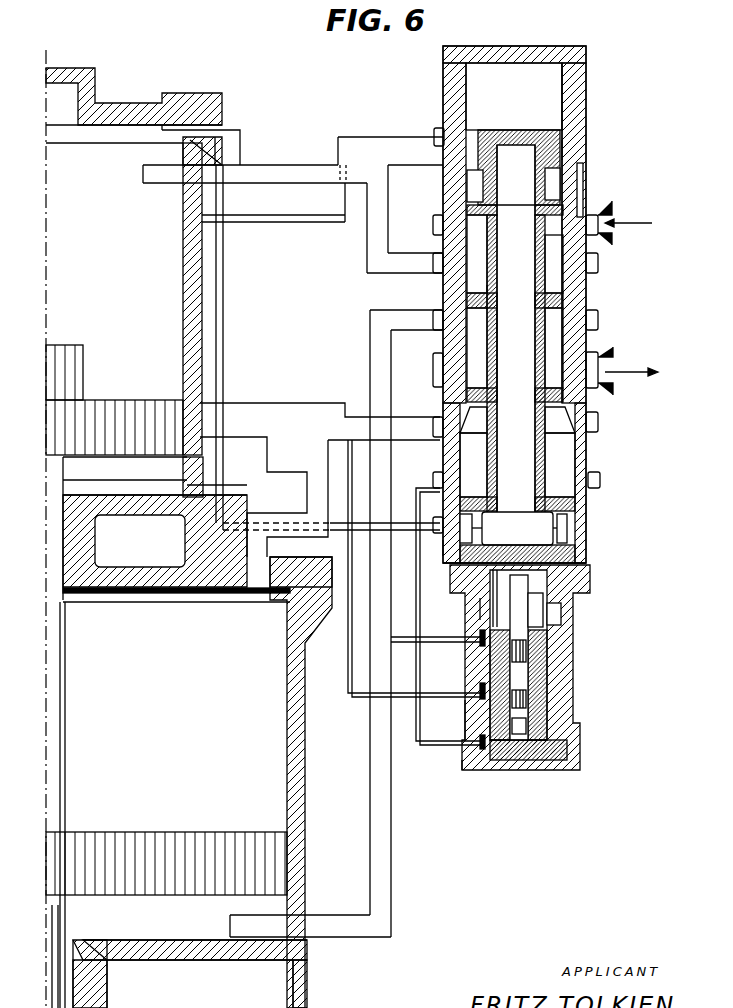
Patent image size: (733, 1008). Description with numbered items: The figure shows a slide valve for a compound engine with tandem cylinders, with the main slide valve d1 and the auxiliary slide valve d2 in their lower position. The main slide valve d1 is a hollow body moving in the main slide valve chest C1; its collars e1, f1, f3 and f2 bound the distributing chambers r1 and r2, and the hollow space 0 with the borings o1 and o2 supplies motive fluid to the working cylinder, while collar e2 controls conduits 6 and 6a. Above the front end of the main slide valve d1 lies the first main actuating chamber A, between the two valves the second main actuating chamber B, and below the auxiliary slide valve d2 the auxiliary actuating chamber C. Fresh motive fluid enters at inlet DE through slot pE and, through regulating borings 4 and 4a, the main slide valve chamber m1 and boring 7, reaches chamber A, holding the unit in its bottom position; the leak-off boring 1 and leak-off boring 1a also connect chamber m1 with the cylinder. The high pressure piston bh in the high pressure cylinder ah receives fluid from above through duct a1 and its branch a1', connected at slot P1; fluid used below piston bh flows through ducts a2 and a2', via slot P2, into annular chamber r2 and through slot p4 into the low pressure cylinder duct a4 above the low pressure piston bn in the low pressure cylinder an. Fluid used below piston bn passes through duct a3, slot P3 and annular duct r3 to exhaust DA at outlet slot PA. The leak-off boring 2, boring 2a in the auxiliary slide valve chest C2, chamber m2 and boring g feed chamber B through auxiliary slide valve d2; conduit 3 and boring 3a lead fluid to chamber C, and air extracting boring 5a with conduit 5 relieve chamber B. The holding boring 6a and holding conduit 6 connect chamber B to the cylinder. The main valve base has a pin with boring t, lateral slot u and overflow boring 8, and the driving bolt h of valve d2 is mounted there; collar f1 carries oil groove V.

The first main actuating chamber A is at (535, 80).
The main slide valve chest C1 is at (573, 118).
The fresh motive fluid regulating boring 4a is at (575, 146).
The fresh motive fluid regulating boring 4 is at (580, 180).
The motive fluid inlet DE is at (619, 221).
The lateral outlet DA is at (622, 369).
The boring in the main slide valve 7 is at (488, 153).
The leak-off boring 1a is at (440, 150).
The inlet slot pE is at (443, 185).
The main slide valve chamber m1 is at (553, 181).
The collar e1 is at (546, 210).
The distributing chamber r1 is at (477, 254).
The groove V is at (488, 296).
The slot P1 is at (443, 290).
The boring o1 is at (543, 272).
The distributing collar f1 is at (538, 300).
The slot P3 is at (443, 345).
The hollow space 0 is at (508, 348).
The annular duct r3 is at (477, 348).
The outlet slot PA is at (458, 375).
The main slide valve d1 is at (543, 365).
The collar f3 is at (538, 395).
The slot p4 is at (450, 453).
The distributing chamber r2 is at (560, 465).
The slot P2 is at (442, 491).
The distributing collar f2 is at (550, 503).
The boring o2 is at (475, 528).
The collar e2 is at (535, 545).
The motive fluid holding boring 6a is at (448, 548).
The second main actuating chamber B is at (586, 565).
The boring t is at (492, 573).
The driving bolt h is at (536, 588).
The overflow boring 8 is at (490, 600).
The lateral slot u is at (540, 608).
The air extracting boring 5a is at (480, 620).
The boring in the auxiliary slide valve g is at (545, 645).
The air extraction conduit 5 is at (437, 651).
The boring in the auxiliary slide valve chest 2a is at (480, 677).
The auxiliary slide valve chamber m2 is at (540, 668).
The auxiliary slide valve chest C2 is at (466, 713).
The auxiliary slide valve d2 is at (536, 710).
The actuating conduit 3 is at (450, 625).
The auxiliary actuating chamber C is at (585, 740).
The boring 3a is at (490, 770).
The duct branch a1' is at (221, 145).
The duct a1 is at (293, 205).
The leak-off boring 1 is at (263, 220).
The high pressure cylinder ah is at (193, 268).
The holding conduit 6 is at (223, 333).
The high pressure piston bh is at (152, 400).
The leak-off boring 2 is at (263, 402).
The low pressure cylinder duct a4 is at (358, 425).
The duct a2 is at (320, 485).
The duct branch a2' is at (219, 501).
The low pressure cylinder an is at (292, 742).
The low pressure piston bn is at (252, 842).
The cylinder duct a3 is at (385, 825).